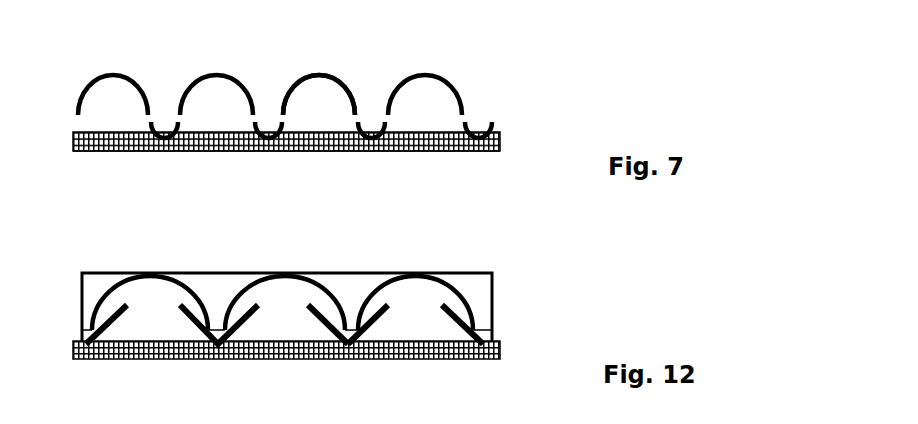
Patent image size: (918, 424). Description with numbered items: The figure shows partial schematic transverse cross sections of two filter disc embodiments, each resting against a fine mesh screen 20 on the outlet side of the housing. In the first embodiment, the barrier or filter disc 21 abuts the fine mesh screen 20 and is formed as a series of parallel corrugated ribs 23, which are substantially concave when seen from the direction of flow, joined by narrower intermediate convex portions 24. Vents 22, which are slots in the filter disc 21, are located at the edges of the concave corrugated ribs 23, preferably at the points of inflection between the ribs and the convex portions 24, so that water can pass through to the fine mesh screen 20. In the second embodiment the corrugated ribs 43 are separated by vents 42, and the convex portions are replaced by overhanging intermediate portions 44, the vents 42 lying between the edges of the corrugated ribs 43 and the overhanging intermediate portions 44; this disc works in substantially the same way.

In FIG. 7, the fine mesh screen 20 is at (100, 148).
In FIG. 12, the fine mesh screen 20 is at (168, 356).
In FIG. 7, the filter disc 21 is at (492, 89).
In FIG. 7, the vents 22 is at (449, 136).
In FIG. 7, the corrugated ribs 23 is at (364, 80).
In FIG. 7, the convex portions 24 is at (146, 151).
In FIG. 12, the vents 42 is at (371, 325).
In FIG. 12, the corrugated ribs 43 is at (276, 249).
In FIG. 12, the overhanging intermediate portions 44 is at (320, 344).